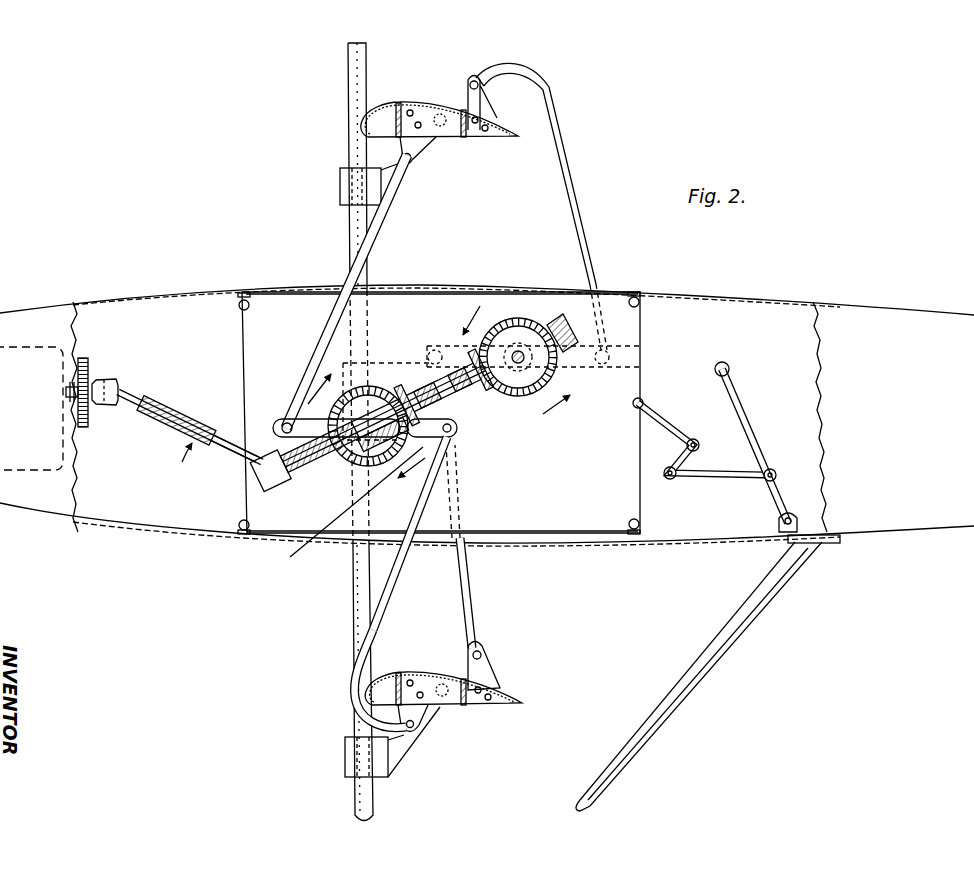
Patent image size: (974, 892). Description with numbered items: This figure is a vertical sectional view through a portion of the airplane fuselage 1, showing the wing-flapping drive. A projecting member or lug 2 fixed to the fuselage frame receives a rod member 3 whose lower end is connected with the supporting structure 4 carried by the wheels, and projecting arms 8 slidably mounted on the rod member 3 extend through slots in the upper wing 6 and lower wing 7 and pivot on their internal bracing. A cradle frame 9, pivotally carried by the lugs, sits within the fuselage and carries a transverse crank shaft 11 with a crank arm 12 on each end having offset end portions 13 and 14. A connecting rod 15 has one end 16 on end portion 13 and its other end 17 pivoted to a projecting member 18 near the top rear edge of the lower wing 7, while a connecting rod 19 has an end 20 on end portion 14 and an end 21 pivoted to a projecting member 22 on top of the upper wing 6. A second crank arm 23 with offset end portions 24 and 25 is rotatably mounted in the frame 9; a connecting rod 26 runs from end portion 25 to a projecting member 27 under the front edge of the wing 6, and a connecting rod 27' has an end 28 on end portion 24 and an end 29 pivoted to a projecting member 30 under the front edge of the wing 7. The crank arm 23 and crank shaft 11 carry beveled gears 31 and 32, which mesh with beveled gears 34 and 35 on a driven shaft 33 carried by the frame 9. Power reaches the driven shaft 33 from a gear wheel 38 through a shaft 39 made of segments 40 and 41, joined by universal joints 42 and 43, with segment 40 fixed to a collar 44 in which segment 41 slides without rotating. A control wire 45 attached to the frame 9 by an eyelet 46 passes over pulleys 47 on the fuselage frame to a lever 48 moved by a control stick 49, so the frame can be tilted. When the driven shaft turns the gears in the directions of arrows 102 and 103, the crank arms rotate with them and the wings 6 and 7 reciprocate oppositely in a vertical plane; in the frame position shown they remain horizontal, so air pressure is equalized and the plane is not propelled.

The airplane fuselage 1 is at (741, 293).
The projecting member or lug 2 is at (405, 384).
The rod member 3 is at (355, 566).
The supporting structure 4 is at (718, 674).
The upper wing 6 is at (490, 139).
The lower wing 7 is at (512, 706).
The projecting arm 8 is at (340, 186).
The frame member or cradle frame 9 is at (312, 472).
The crank shaft 11 is at (519, 366).
The crank arm 12 is at (520, 338).
The end portion 13 is at (477, 300).
The end portion 14 is at (642, 362).
The connecting rod 15 is at (478, 586).
The end 16 is at (468, 402).
The end 17 is at (482, 652).
The projecting member 18 is at (501, 682).
The connecting rod 19 is at (586, 184).
The end 20 is at (640, 340).
The end 21 is at (486, 66).
The projecting member 22 is at (466, 95).
The crank arm 23 is at (345, 514).
The end portion 24 is at (449, 443).
The end portion 25 is at (298, 419).
The connecting rod 26 is at (348, 272).
The projecting member 27 is at (362, 138).
The connecting rod 27' is at (372, 533).
The end 28 is at (458, 431).
The end 29 is at (382, 732).
The projecting member 30 is at (416, 727).
The beveled gear 31 is at (370, 390).
The beveled gear 32 is at (557, 371).
The driven shaft 33 is at (330, 470).
The beveled gear 34 is at (401, 386).
The beveled gear 35 is at (480, 386).
The gear wheel 38 is at (90, 360).
The shaft 39 is at (173, 458).
The segment 40 is at (128, 392).
The segment 41 is at (206, 440).
The universal joint 42 is at (113, 384).
The universal joint 43 is at (283, 432).
The collar 44 is at (166, 410).
The control wire 45 is at (240, 346).
The eyelet 46 is at (258, 478).
The pulley 47 is at (248, 311).
The lever 48 is at (662, 422).
The control stick 49 is at (752, 432).
The arrow 102 is at (424, 452).
The arrow 103 is at (545, 426).